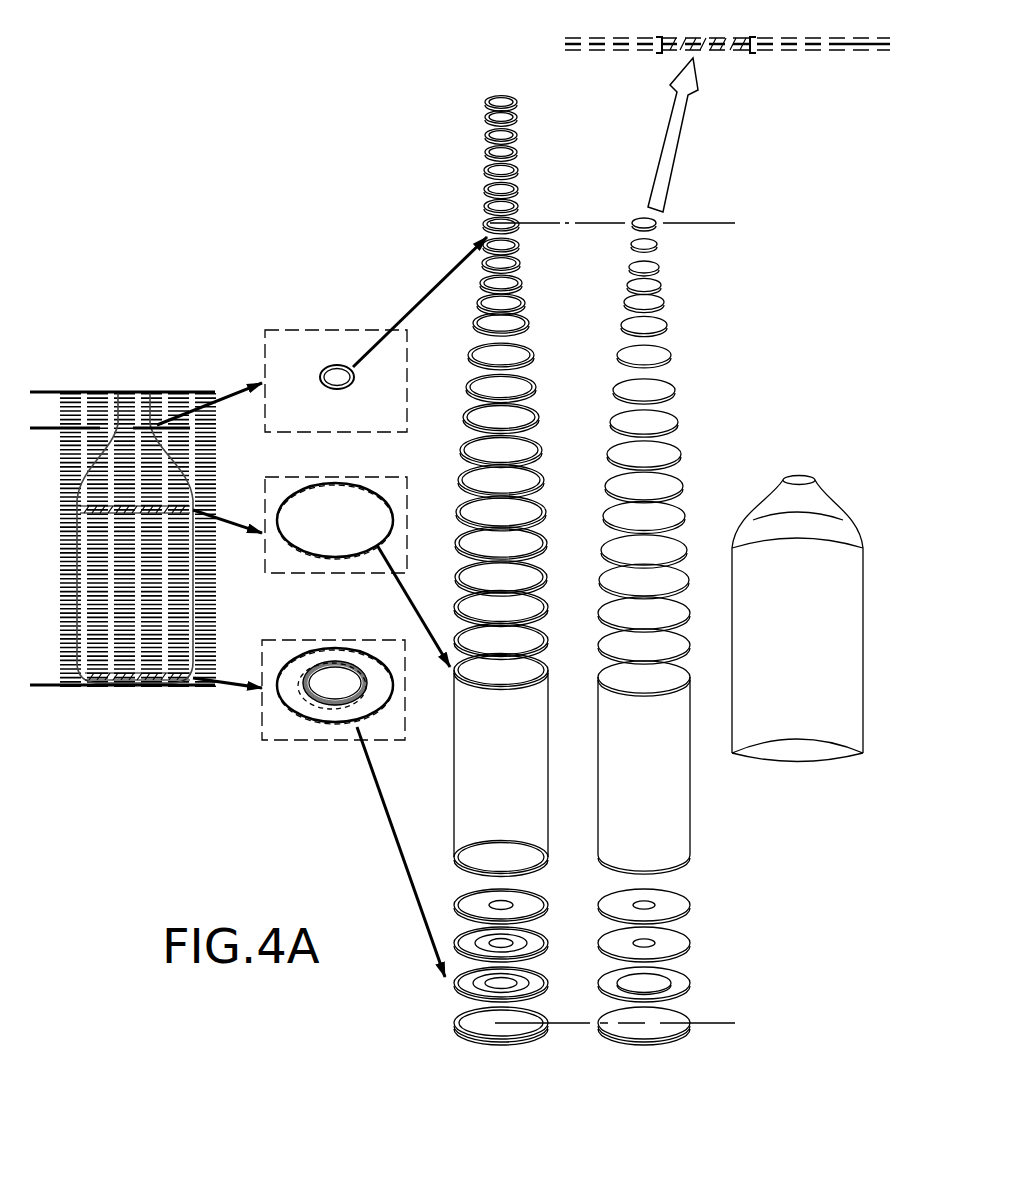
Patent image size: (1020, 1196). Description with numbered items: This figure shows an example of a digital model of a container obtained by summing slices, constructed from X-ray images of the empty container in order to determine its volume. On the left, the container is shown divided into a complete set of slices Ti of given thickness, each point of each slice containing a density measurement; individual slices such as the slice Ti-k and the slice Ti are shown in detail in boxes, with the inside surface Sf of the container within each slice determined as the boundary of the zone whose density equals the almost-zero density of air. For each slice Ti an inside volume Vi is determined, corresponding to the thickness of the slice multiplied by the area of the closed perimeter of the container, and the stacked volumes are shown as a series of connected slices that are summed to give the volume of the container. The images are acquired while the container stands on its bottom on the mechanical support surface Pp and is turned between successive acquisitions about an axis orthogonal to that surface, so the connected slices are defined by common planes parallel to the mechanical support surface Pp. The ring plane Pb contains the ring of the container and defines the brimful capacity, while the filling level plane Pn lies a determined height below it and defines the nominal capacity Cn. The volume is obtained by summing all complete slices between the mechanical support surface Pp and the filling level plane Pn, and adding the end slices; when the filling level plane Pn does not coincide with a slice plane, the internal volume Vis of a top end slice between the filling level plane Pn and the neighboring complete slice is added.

The ring plane Pb is at (47, 387).
The filling level plane Pn is at (44, 433).
The mechanical support surface Pp is at (46, 684).
The slice Ti-k is at (284, 331).
The slice Ti is at (284, 479).
The inside surface Sf is at (462, 517).
The inside volume Vi is at (612, 673).
The internal volume of top end slice Vis is at (725, 50).
The nominal capacity Cn is at (846, 647).